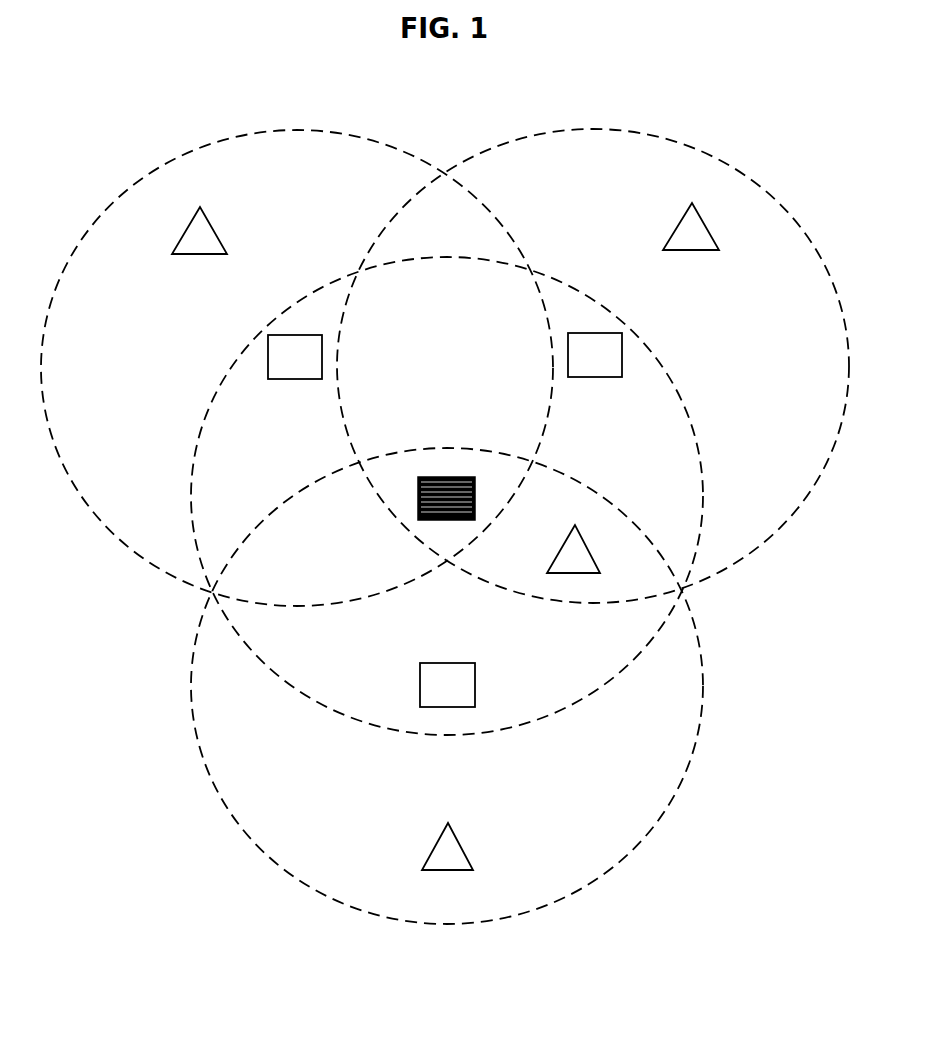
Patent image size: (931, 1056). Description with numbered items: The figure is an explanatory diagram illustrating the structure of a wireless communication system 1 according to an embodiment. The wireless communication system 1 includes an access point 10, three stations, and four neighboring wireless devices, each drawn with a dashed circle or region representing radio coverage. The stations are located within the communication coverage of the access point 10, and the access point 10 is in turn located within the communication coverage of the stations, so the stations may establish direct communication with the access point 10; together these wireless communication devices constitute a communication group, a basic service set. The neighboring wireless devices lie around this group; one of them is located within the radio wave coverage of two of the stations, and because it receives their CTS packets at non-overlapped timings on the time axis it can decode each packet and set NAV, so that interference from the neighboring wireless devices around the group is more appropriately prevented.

The wireless communication system 1 is at (98, 842).
The access point 10 is at (442, 475).